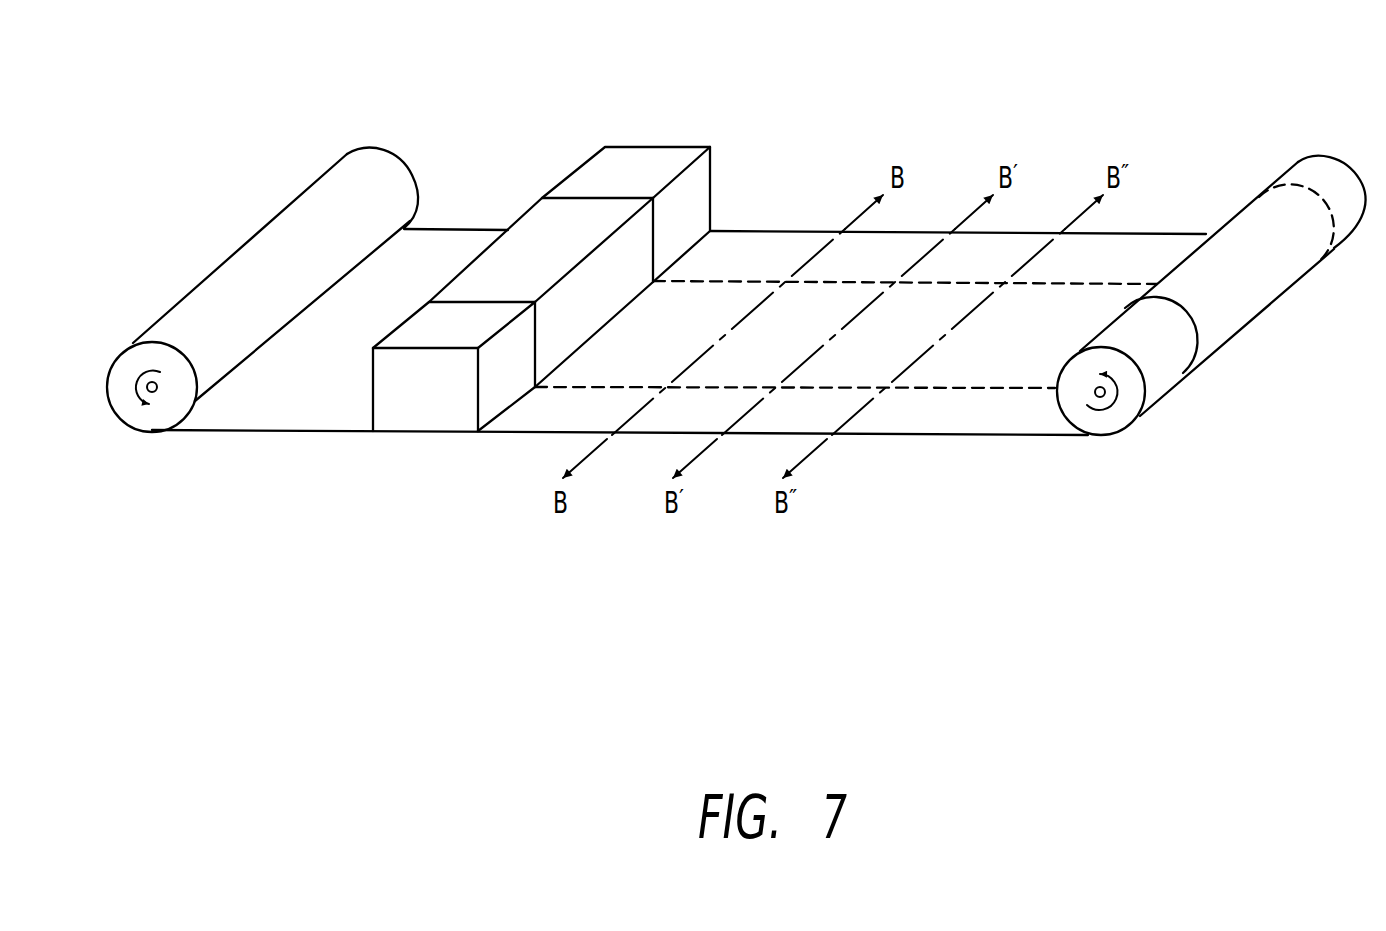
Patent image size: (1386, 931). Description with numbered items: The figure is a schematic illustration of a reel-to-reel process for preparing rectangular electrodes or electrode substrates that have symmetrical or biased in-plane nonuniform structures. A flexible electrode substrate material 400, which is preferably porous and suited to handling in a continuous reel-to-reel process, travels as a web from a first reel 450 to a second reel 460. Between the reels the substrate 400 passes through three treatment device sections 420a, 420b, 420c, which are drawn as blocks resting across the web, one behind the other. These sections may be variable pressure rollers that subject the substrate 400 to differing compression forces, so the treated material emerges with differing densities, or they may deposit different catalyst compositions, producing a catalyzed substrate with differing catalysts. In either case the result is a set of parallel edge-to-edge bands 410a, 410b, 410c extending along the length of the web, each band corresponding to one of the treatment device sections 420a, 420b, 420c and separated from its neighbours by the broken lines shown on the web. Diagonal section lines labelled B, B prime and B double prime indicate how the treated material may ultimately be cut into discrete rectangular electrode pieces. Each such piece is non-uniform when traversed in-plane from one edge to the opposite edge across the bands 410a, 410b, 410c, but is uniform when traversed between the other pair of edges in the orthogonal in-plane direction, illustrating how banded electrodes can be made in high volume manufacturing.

The electrode substrate material 400 is at (267, 431).
The band 410a is at (898, 411).
The band 410b is at (995, 363).
The band 410c is at (778, 255).
The treatment device section 420a is at (450, 327).
The treatment device section 420b is at (538, 243).
The treatment device section 420c is at (637, 170).
The reel 450 is at (130, 428).
The reel 460 is at (1117, 434).